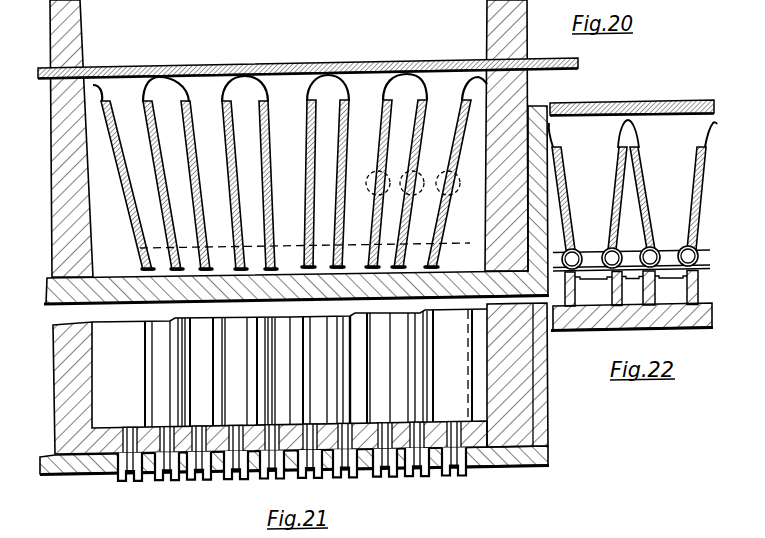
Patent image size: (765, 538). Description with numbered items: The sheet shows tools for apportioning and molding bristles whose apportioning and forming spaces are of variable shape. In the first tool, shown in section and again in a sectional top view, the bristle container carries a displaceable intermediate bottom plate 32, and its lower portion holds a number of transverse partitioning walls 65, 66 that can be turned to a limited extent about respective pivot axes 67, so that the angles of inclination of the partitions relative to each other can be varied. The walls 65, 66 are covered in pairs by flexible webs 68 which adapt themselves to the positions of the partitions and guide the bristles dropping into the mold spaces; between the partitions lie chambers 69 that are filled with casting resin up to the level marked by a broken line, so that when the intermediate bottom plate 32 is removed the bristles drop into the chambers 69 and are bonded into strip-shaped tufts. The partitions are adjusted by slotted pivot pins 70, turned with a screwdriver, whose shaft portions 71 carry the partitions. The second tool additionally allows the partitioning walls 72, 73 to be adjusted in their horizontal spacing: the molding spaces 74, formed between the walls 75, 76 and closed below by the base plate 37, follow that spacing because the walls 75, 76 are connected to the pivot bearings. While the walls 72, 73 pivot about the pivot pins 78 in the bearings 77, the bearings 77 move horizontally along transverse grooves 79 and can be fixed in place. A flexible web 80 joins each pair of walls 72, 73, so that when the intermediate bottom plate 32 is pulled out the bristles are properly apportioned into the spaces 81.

In FIG. 20, the intermediate bottom plate 32 is at (578, 59).
In FIG. 22, the intermediate bottom plate 32 is at (678, 103).
In FIG. 22, the base plate 37 is at (683, 323).
In FIG. 20, the transverse partitioning wall 65 is at (122, 155).
In FIG. 20, the transverse partitioning wall 66 is at (163, 211).
In FIG. 20, the pivot axis 67 is at (376, 172).
In FIG. 20, the flexible web 68 is at (223, 90).
In FIG. 20, the chamber 69 is at (417, 257).
In FIG. 21, the pivot pin 70 is at (410, 470).
In FIG. 21, the shaft portion 71 is at (473, 466).
In FIG. 22, the partitioning wall 72 is at (642, 192).
In FIG. 22, the partitioning wall 73 is at (614, 196).
In FIG. 22, the molding space 74 is at (592, 297).
In FIG. 22, the wall 75 is at (687, 288).
In FIG. 22, the wall 76 is at (645, 298).
In FIG. 22, the pivot bearing 77 is at (681, 251).
In FIG. 22, the pivot pin 78 is at (642, 251).
In FIG. 22, the transverse groove 79 is at (590, 251).
In FIG. 22, the flexible web 80 is at (635, 136).
In FIG. 22, the apportioning space 81 is at (680, 203).